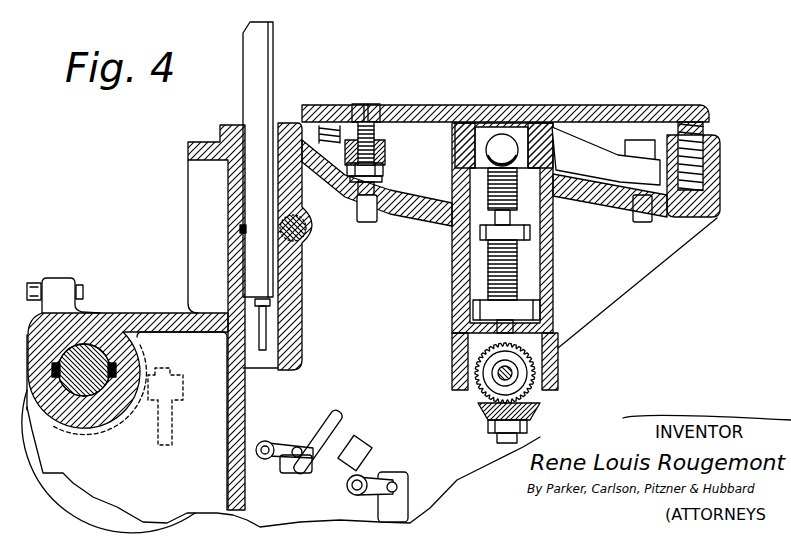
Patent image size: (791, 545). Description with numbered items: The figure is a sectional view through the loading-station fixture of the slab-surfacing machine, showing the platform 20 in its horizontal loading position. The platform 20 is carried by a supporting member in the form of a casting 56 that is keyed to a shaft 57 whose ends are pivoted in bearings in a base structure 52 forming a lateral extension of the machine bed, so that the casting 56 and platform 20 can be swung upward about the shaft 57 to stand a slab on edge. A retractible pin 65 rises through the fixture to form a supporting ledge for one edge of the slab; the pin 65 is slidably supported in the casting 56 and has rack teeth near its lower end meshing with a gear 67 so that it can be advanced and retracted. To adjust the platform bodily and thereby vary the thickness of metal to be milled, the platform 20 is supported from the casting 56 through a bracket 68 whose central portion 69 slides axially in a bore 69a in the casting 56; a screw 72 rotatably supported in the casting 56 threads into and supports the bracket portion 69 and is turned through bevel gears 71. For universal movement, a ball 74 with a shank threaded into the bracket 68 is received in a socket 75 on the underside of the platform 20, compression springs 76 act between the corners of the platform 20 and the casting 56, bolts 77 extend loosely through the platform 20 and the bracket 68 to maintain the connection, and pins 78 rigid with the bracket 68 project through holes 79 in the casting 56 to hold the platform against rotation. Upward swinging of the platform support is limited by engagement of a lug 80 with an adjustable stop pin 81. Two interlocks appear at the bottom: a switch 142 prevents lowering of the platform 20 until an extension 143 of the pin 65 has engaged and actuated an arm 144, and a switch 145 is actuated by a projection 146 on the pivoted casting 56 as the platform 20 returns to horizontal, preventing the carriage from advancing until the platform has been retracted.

The platform 20 is at (588, 106).
The base structure 52 is at (445, 484).
The casting 56 is at (612, 296).
The shaft 57 is at (92, 393).
The retractible pins 65 is at (262, 68).
The gears 67 is at (307, 240).
The bracket 68 is at (567, 190).
The central portion 69 is at (525, 268).
The bore 69a is at (520, 244).
The bevel gears 71 is at (527, 400).
The screw 72 is at (505, 268).
The ball 74 is at (510, 145).
The socket 75 is at (477, 135).
The compression springs 76 is at (322, 128).
The bolts 77 is at (372, 124).
The pins 78 is at (367, 222).
The holes 79 is at (372, 196).
The lug 80 is at (172, 368).
The adjustable stop pin 81 is at (86, 292).
The switch 142 is at (312, 438).
The extension 143 is at (268, 338).
The arm 144 is at (282, 458).
The switch 145 is at (386, 506).
The projection 146 is at (372, 455).